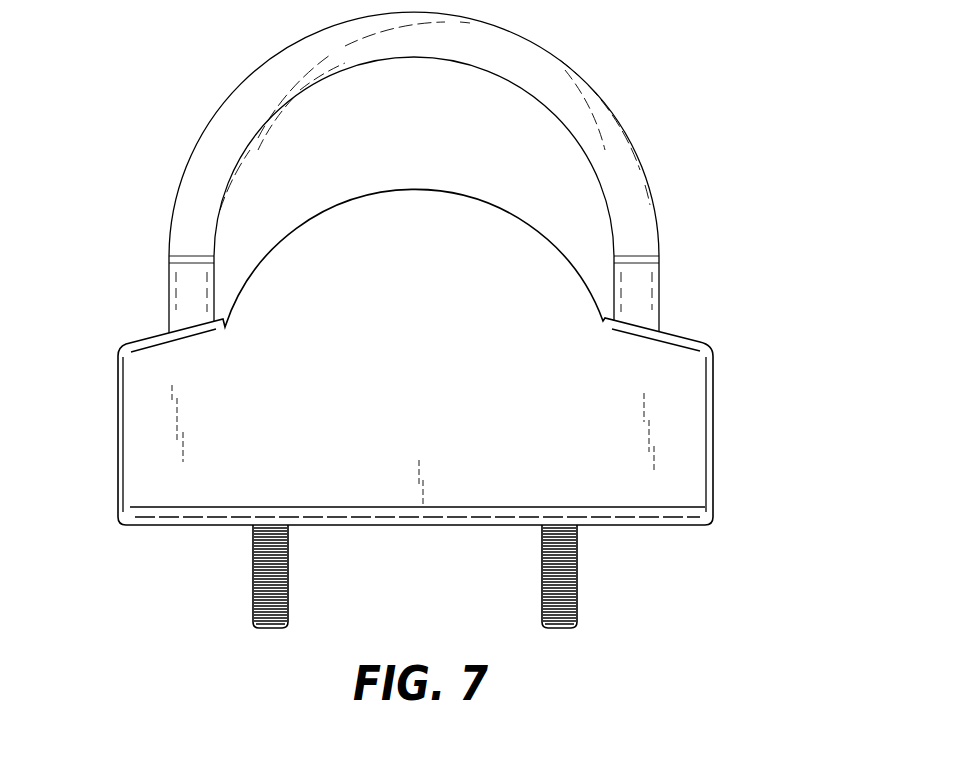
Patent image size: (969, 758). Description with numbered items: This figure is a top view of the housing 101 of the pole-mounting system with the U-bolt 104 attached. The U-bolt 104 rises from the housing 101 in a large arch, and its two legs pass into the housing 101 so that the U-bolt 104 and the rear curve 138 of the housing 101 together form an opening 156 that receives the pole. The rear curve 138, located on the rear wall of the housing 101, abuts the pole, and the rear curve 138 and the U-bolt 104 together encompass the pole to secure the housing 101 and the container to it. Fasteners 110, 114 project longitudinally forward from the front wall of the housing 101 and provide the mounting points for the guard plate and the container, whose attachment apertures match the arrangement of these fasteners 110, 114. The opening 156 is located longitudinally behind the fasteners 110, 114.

The housing 101 is at (676, 422).
The U-bolt 104 is at (627, 137).
The fastener 110 is at (252, 592).
The fastener 114 is at (578, 582).
The rear curve 138 is at (238, 357).
The opening 156 is at (507, 102).